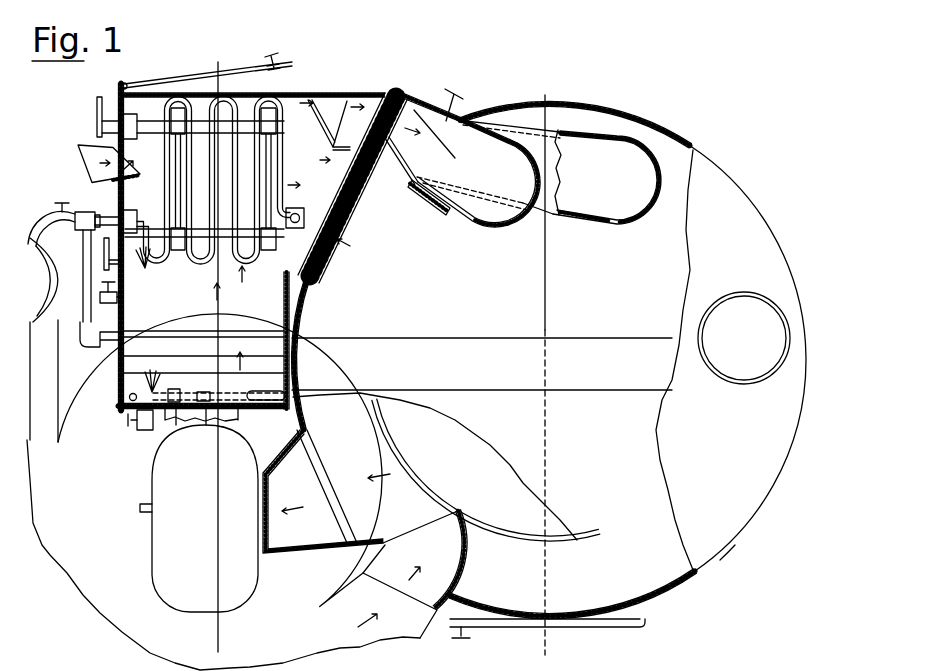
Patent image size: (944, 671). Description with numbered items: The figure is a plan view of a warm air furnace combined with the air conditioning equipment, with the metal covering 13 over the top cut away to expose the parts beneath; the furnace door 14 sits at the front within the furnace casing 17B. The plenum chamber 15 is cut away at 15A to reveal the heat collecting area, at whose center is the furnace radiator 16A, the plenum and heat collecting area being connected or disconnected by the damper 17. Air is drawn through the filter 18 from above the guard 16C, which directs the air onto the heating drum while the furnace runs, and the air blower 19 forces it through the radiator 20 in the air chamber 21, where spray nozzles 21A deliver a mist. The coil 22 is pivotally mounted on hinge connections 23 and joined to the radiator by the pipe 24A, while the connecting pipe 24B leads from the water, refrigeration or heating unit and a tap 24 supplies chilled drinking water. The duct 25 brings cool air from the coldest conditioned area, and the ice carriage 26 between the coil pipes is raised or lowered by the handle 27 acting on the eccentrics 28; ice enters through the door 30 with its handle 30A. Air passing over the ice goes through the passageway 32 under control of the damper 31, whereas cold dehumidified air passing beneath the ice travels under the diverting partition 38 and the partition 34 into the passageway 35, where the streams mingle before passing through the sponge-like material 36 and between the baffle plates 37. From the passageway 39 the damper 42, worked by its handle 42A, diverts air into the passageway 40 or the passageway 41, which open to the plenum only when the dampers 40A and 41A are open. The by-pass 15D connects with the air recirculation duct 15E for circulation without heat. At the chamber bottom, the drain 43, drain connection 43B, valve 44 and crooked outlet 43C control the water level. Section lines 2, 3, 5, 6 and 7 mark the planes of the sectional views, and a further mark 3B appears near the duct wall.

The section line 2— 2 is at (517, 95).
The section line 3— 3 is at (229, 188).
The duct wall junction 3B is at (309, 272).
The section line 5— 5 is at (205, 351).
The section line 6— 6 is at (453, 160).
The section line 7— 7 is at (110, 403).
The metal covering 13 is at (731, 358).
The furnace door 14 is at (626, 630).
The plenum chamber 15 is at (493, 359).
The cut-away portion of plenum chamber 15A is at (470, 434).
The by-pass 15D is at (247, 555).
The air recirculation duct 15E is at (205, 422).
The furnace radiator 16A is at (486, 470).
The guard 16C is at (411, 550).
The damper 17 is at (482, 364).
The furnace casing 17B is at (735, 545).
The filter 18 is at (310, 467).
The air blower 19 is at (199, 510).
The radiator 20 is at (204, 352).
The air chamber 21 is at (251, 247).
The spray nozzles 21A is at (146, 272).
The coil 22 is at (206, 254).
The hinge connections 23 is at (124, 212).
The tap 24 is at (56, 219).
The pipe 24A is at (87, 288).
The connecting pipe 24B is at (335, 240).
The duct 25 is at (109, 164).
The ice carriage 26 is at (176, 172).
The handle 27 is at (99, 119).
The eccentrics 28 is at (176, 121).
The door 30 is at (214, 70).
The door handle 30A is at (278, 55).
The damper 31 is at (314, 106).
The passageway 32 is at (302, 128).
The partition 34 is at (344, 145).
The passageway 35 is at (379, 118).
The sponge-like material 36 is at (399, 92).
The baffle plates 37 is at (400, 115).
The diverting partition 38 is at (319, 170).
The passageway 39 is at (432, 120).
The passageway 40 is at (479, 172).
The damper 40A is at (436, 212).
The passageway 41 is at (592, 177).
The damper 41A is at (583, 226).
The damper 42 is at (461, 121).
The handle 42A is at (458, 96).
The drain 43 is at (207, 411).
The drain connection 43B is at (138, 428).
The outlet 43C is at (292, 385).
The valve 44 is at (176, 414).